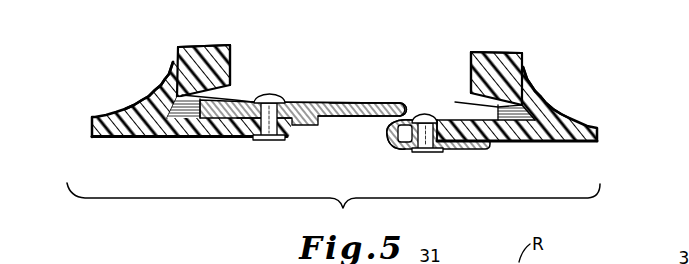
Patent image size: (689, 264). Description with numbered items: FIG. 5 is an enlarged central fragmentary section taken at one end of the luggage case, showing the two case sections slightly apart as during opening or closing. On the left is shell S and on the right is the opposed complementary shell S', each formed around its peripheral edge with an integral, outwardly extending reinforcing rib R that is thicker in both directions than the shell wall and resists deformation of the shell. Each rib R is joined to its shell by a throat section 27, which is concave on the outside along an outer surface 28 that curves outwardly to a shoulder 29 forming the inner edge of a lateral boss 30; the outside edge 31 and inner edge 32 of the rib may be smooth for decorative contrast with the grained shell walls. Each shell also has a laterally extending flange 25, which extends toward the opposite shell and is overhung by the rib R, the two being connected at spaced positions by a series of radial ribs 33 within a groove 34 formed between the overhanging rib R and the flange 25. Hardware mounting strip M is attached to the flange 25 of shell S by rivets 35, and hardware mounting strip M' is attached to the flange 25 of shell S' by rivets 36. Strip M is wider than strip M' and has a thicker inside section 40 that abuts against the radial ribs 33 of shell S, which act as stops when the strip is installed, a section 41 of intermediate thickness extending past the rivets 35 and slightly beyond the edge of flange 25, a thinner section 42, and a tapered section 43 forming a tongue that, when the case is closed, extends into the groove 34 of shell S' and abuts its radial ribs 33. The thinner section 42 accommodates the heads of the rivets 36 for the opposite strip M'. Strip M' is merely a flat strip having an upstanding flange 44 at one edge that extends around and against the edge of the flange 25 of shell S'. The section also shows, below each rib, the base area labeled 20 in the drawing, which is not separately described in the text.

The base plate 20 is at (103, 130).
The laterally extending flange 25 is at (246, 128).
The throat section 27 is at (160, 100).
The outer surface 28 is at (167, 83).
The shoulder 29 is at (173, 63).
The lateral boss 30 is at (176, 57).
The outside edge 31 is at (208, 44).
The inner edge 32 is at (232, 62).
The radial ribs 33 is at (192, 118).
The groove 34 is at (220, 97).
The rivets 35 is at (284, 141).
The rivets 36 is at (423, 152).
The thicker inside section 40 is at (224, 108).
The section of intermediate thickness 41 is at (303, 103).
The thinner section 42 is at (356, 118).
The tapered section 43 is at (399, 101).
The upstanding flange 44 is at (389, 138).
The concave shell S is at (171, 99).
The concave shell S' is at (541, 104).
The outwardly extending rib R is at (218, 42).
The hardware mounting strip M is at (365, 75).
The hardware mounting strip M' is at (447, 154).